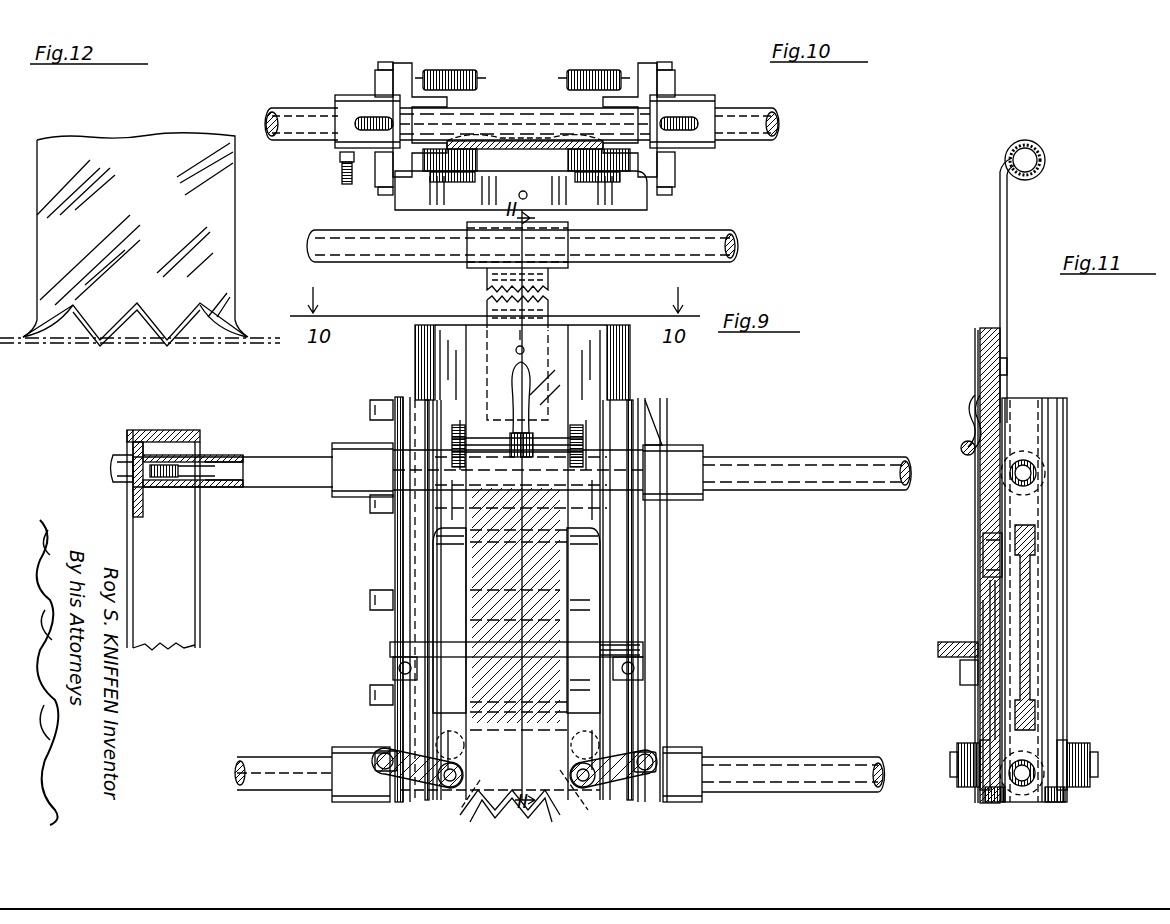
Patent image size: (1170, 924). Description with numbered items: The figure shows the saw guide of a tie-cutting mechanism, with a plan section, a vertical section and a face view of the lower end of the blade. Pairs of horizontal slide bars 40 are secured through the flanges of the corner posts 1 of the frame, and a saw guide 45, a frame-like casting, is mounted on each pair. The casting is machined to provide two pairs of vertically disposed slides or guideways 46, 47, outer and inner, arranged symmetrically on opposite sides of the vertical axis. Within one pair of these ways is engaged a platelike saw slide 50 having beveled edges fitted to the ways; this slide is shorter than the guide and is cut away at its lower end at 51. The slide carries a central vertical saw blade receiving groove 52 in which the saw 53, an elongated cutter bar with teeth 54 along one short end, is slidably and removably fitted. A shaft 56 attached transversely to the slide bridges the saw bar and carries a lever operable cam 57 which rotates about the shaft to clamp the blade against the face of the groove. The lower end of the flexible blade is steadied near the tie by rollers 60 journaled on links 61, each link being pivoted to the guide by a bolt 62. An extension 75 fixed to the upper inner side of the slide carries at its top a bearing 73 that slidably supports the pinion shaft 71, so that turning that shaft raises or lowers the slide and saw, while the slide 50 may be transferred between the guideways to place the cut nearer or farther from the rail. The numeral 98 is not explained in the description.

In FIG. 9, the corner posts 1 is at (180, 580).
In FIG. 10, the slide bars 40 is at (782, 112).
In FIG. 9, the slide bars 40 is at (788, 490).
In FIG. 11, the slide bars 40 is at (1036, 470).
In FIG. 10, the saw guide 45 is at (672, 97).
In FIG. 9, the saw guide 45 is at (640, 600).
In FIG. 10, the outer guideways 46 is at (412, 90).
In FIG. 11, the outer guideways 46 is at (1050, 565).
In FIG. 10, the inner guideways 47 is at (440, 160).
In FIG. 11, the inner guideways 47 is at (990, 708).
In FIG. 10, the saw slide 50 is at (632, 195).
In FIG. 9, the saw slide 50 is at (612, 378).
In FIG. 11, the saw slide 50 is at (1000, 345).
In FIG. 9, the cut-away portion 51 is at (605, 548).
In FIG. 11, the cut-away portion 51 is at (985, 556).
In FIG. 10, the saw blade receiving groove 52 is at (500, 141).
In FIG. 9, the saw blade receiving groove 52 is at (590, 345).
In FIG. 11, the saw blade receiving groove 52 is at (985, 383).
In FIG. 9, the saw 53 is at (485, 580).
In FIG. 11, the saw 53 is at (978, 605).
In FIG. 12, the saw 53 is at (127, 155).
In FIG. 9, the teeth 54 is at (563, 805).
In FIG. 12, the teeth 54 is at (132, 340).
In FIG. 9, the shaft 56 is at (478, 440).
In FIG. 11, the shaft 56 is at (968, 452).
In FIG. 9, the lever operable cam 57 is at (530, 452).
In FIG. 11, the lever operable cam 57 is at (972, 455).
In FIG. 10, the rollers 60 is at (470, 72).
In FIG. 9, the rollers 60 is at (462, 768).
In FIG. 11, the rollers 60 is at (985, 797).
In FIG. 10, the links 61 is at (404, 72).
In FIG. 9, the links 61 is at (410, 795).
In FIG. 11, the links 61 is at (975, 745).
In FIG. 10, the bolt 62 is at (386, 62).
In FIG. 9, the bolt 62 is at (380, 748).
In FIG. 11, the bolt 62 is at (955, 760).
In FIG. 10, the shaft 71 is at (735, 244).
In FIG. 11, the shaft 71 is at (1030, 142).
In FIG. 10, the bearing 73 is at (480, 252).
In FIG. 11, the bearing 73 is at (1046, 162).
In FIG. 10, the extension 75 is at (528, 141).
In FIG. 9, the extension 75 is at (550, 328).
In FIG. 11, the extension 75 is at (1000, 236).
In FIG. 10, the cross bar 98 is at (418, 196).
In FIG. 9, the cross bar 98 is at (615, 650).
In FIG. 11, the cross bar 98 is at (940, 652).